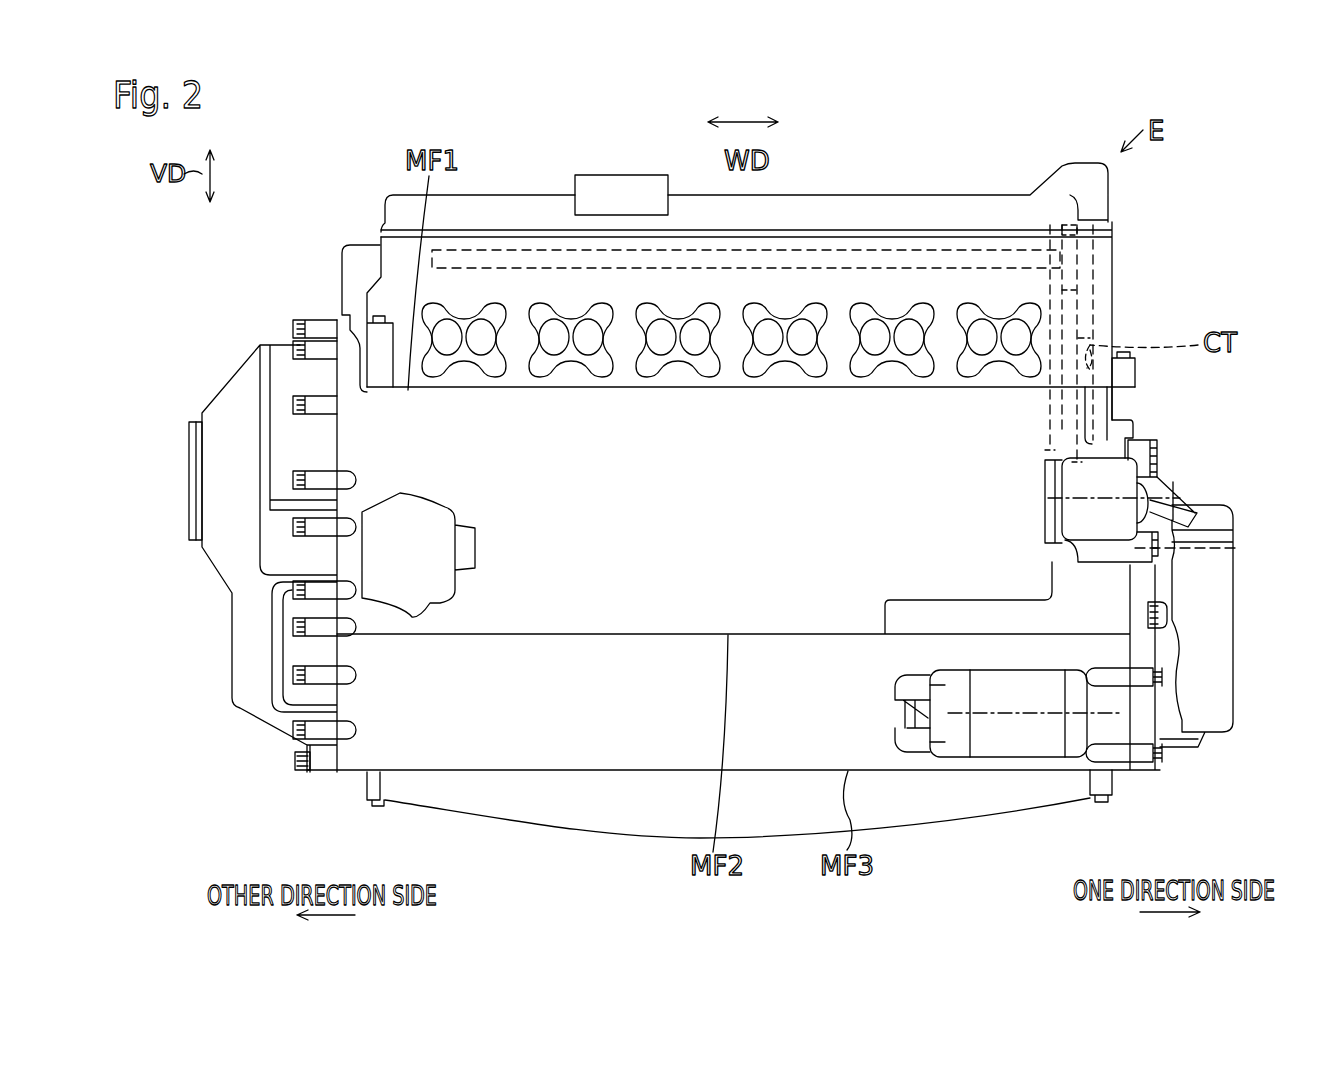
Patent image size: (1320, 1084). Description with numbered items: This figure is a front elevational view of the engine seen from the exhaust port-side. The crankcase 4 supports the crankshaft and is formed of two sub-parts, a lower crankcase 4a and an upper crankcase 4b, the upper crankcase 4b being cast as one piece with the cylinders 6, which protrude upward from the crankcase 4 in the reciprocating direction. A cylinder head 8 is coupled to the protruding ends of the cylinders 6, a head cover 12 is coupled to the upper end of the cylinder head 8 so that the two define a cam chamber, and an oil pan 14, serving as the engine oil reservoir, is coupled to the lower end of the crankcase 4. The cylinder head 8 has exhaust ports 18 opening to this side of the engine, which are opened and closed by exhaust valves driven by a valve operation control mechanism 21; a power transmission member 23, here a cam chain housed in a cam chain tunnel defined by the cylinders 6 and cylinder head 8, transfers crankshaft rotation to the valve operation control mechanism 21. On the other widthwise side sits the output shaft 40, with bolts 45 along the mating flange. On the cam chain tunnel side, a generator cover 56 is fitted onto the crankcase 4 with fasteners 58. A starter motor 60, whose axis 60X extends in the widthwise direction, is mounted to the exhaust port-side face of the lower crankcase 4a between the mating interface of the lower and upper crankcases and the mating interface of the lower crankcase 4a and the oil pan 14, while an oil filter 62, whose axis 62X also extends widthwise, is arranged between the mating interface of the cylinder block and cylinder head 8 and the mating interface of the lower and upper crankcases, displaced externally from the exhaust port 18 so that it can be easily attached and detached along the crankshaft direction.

The crankcase 4 is at (682, 596).
The lower crankcase 4a is at (657, 546).
The upper crankcase 4b is at (450, 618).
The cylinders 6 is at (1114, 390).
The cylinder head 8 is at (1026, 288).
The head cover 12 is at (910, 203).
The oil pan 14 is at (1083, 796).
The exhaust port 18 is at (1015, 340).
The valve operation control mechanism 21 is at (515, 250).
The power transmission member 23 is at (1090, 338).
The output shaft 40 is at (190, 508).
The bolts 45 is at (295, 630).
The generator cover 56 is at (1228, 633).
The fasteners 58 is at (1158, 462).
The starter motor 60 is at (1035, 745).
The axis of rotation of the starter motor 60X is at (985, 713).
The oil filter 62 is at (1113, 478).
The axis of the oil filter 62X is at (1214, 553).